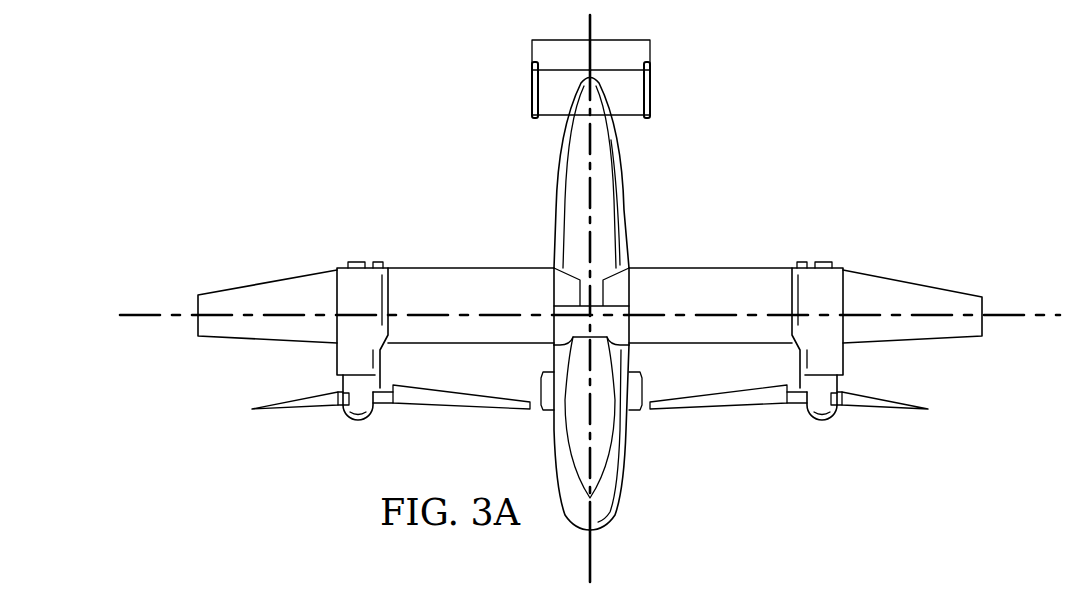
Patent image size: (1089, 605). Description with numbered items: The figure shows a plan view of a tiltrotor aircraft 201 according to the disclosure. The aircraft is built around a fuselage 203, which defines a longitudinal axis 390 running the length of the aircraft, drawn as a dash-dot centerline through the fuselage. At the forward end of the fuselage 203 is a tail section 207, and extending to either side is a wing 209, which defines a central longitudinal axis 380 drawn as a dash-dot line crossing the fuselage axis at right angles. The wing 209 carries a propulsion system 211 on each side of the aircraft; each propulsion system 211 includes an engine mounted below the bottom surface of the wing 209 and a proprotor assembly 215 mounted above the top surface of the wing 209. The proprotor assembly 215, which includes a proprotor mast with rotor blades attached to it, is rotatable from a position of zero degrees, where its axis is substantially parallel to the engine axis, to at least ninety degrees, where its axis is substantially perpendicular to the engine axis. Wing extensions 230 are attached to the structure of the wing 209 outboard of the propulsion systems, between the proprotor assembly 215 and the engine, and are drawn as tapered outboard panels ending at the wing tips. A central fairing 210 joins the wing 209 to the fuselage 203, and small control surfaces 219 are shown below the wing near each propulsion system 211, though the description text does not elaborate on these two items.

The tiltrotor aircraft 201 is at (598, 303).
The fuselage 203 is at (627, 497).
The tail section 207 is at (531, 80).
The wing 209 is at (463, 268).
The wing center section 210 is at (618, 285).
The propulsion system 211 is at (829, 242).
The proprotor assembly 215 is at (825, 420).
The flap 219 is at (893, 409).
The wing extension 230 is at (912, 281).
The central longitudinal axis 380 is at (1040, 313).
The longitudinal axis 390 is at (593, 566).